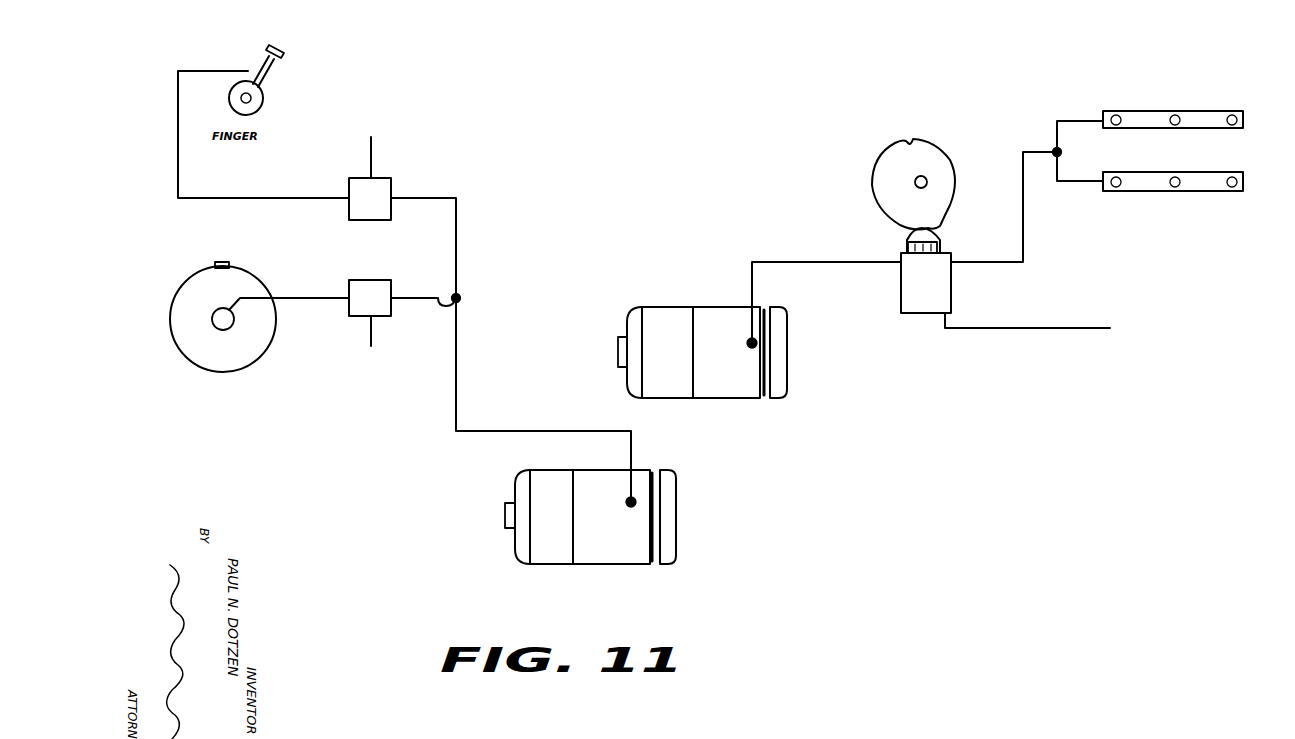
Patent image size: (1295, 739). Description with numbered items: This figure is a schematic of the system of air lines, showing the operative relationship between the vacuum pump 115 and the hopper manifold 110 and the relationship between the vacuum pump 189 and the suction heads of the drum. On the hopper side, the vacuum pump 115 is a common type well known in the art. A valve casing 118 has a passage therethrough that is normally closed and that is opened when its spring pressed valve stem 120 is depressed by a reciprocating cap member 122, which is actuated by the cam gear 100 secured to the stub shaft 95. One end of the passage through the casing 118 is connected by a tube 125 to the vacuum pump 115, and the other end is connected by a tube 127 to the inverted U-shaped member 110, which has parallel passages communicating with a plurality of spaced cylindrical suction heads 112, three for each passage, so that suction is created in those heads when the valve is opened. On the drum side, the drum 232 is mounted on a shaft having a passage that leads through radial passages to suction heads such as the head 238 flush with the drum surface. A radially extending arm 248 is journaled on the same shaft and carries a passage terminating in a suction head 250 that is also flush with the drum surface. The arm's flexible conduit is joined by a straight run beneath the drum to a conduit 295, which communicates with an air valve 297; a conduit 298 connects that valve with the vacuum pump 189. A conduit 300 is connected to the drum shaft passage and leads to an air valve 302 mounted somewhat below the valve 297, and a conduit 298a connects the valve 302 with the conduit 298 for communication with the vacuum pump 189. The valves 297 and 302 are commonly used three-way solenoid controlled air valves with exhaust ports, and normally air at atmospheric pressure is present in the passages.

The stub shaft 95 is at (915, 178).
The cam gear 100 is at (913, 139).
The inverted U-shaped member 110 is at (1238, 122).
The suction heads 112 is at (1120, 125).
The vacuum pump 115 is at (718, 312).
The valve casing 118 is at (937, 305).
The valve stem 120 is at (906, 246).
The cap member 122 is at (940, 238).
The tube 125 is at (1023, 233).
The tube 127 is at (807, 262).
The vacuum pump 189 is at (614, 554).
The drum 232 is at (177, 343).
The suction head 238 is at (244, 243).
The radially extending arm 248 is at (280, 68).
The suction head 250 is at (286, 50).
The conduit 295 is at (290, 181).
The air valve 297 is at (384, 190).
The conduit 298 is at (458, 283).
The conduit 298a is at (460, 300).
The conduit 300 is at (312, 283).
The air valve 302 is at (359, 317).